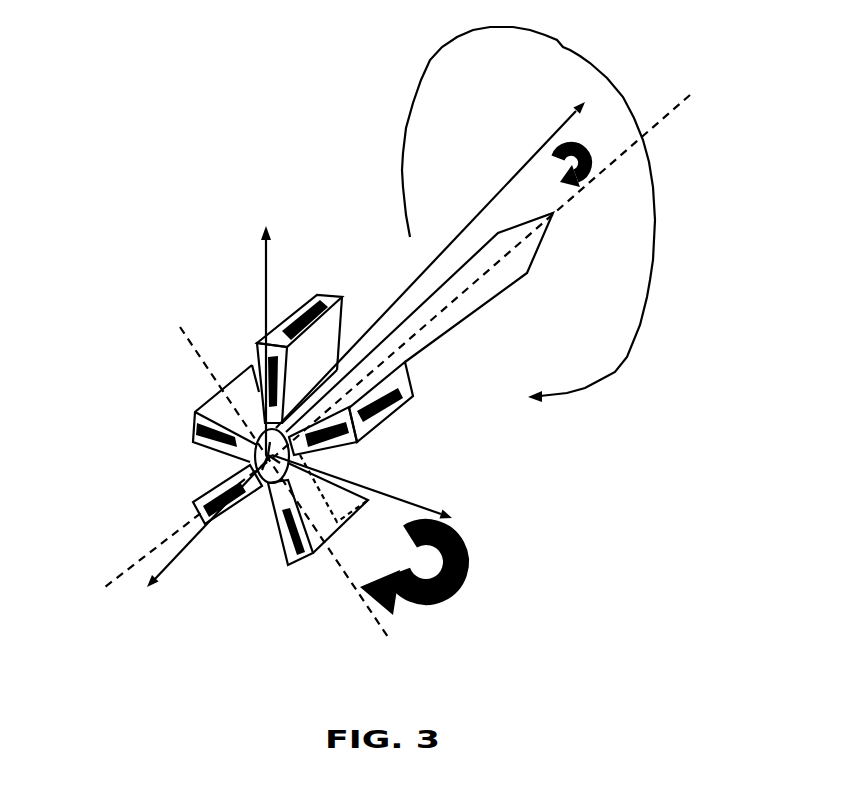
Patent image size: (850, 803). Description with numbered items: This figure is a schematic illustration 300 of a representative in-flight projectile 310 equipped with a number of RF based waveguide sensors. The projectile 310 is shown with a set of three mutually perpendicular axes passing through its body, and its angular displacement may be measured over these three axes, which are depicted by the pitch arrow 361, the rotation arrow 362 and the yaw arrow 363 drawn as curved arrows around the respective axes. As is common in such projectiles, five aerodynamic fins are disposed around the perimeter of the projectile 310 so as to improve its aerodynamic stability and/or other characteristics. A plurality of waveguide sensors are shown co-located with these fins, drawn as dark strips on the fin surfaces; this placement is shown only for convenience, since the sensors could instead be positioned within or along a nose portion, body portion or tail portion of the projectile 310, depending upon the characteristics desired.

The satellite sensor system 300 is at (808, 58).
The in-flight projectile 310 is at (523, 277).
The pitch arrow 361 is at (542, 147).
The rotation arrow 362 is at (635, 353).
The yaw arrow 363 is at (467, 587).